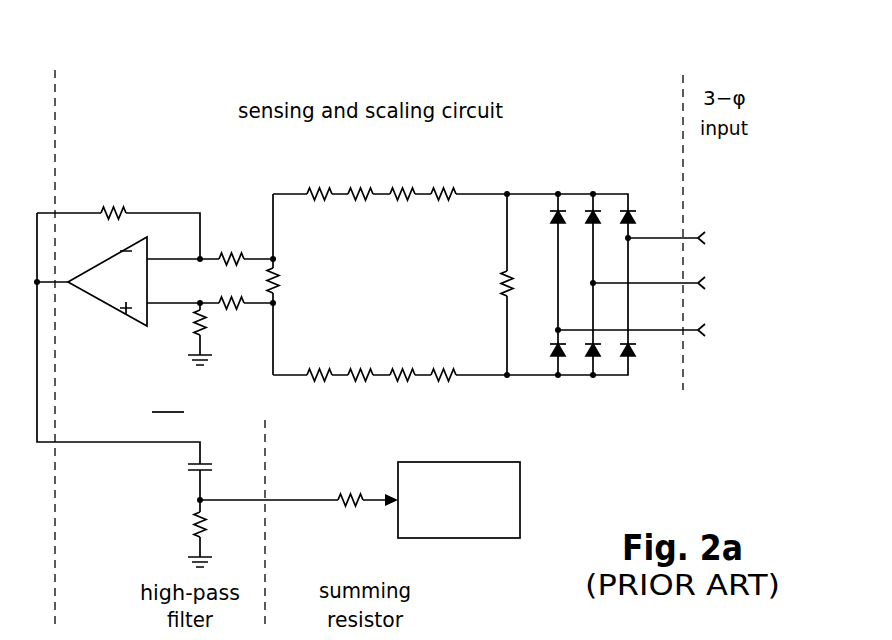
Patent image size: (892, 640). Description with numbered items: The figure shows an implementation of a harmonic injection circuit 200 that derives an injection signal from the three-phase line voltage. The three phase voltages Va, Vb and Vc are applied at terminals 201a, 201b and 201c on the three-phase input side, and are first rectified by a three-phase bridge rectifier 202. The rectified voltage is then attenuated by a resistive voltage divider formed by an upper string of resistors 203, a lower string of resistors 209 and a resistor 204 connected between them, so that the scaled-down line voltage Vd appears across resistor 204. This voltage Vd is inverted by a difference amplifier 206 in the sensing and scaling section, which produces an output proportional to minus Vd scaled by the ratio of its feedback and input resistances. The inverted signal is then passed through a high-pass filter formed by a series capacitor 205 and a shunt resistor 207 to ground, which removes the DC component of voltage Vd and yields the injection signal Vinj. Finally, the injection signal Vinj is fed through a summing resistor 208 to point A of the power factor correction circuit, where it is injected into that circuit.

The harmonic injection circuit 200 is at (596, 87).
The terminal 201a is at (690, 237).
The terminal 201b is at (694, 287).
The terminal 201c is at (688, 334).
The three-phase bridge rectifier 202 is at (635, 380).
The resistor 203 is at (462, 204).
The resistor 204 is at (279, 270).
The capacitor 205 is at (206, 462).
The difference amplifier 206 is at (116, 310).
The resistor 207 is at (206, 518).
The summing resistor 208 is at (348, 492).
The resistor 209 is at (462, 385).